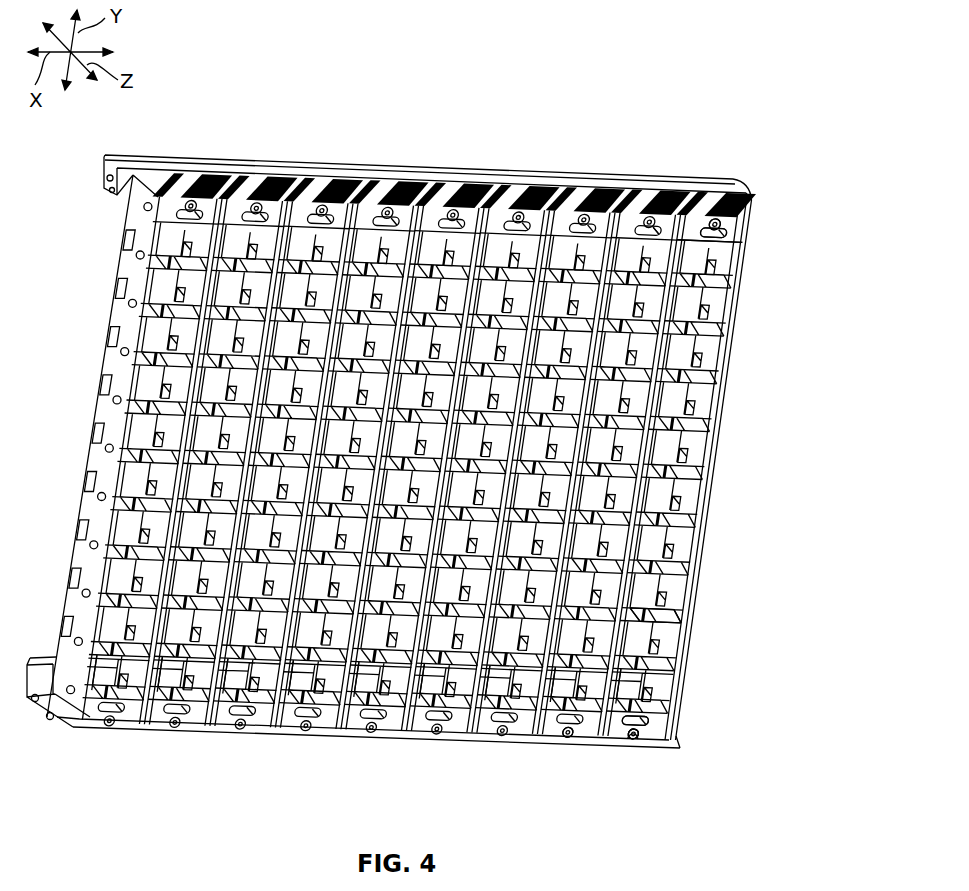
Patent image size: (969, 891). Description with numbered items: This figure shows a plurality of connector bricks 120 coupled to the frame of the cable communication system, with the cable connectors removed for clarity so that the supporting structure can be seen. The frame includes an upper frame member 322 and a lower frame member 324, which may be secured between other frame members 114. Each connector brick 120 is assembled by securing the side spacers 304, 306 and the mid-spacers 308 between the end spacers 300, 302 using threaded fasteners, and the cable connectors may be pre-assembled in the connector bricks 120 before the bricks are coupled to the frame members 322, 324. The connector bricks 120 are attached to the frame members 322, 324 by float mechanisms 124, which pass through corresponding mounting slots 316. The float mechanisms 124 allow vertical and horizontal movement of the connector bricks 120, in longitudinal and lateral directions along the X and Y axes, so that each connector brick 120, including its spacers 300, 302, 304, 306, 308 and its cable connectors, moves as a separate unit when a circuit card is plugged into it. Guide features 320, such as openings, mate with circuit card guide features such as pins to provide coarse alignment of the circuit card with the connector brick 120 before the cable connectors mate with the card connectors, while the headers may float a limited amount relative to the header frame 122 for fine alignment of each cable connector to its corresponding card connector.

The frame member 114 is at (716, 172).
The connector brick 120 is at (570, 742).
The header frame 122 is at (755, 218).
The float mechanism 124 is at (718, 212).
The end spacer 300 is at (675, 686).
The end spacer 302 is at (617, 693).
The side spacer 304 is at (737, 233).
The side spacer 306 is at (654, 715).
The mid-spacer 308 is at (664, 615).
The mounting slot 316 is at (720, 240).
The guide feature 320 is at (655, 238).
The upper frame member 322 is at (647, 176).
The lower frame member 324 is at (672, 752).